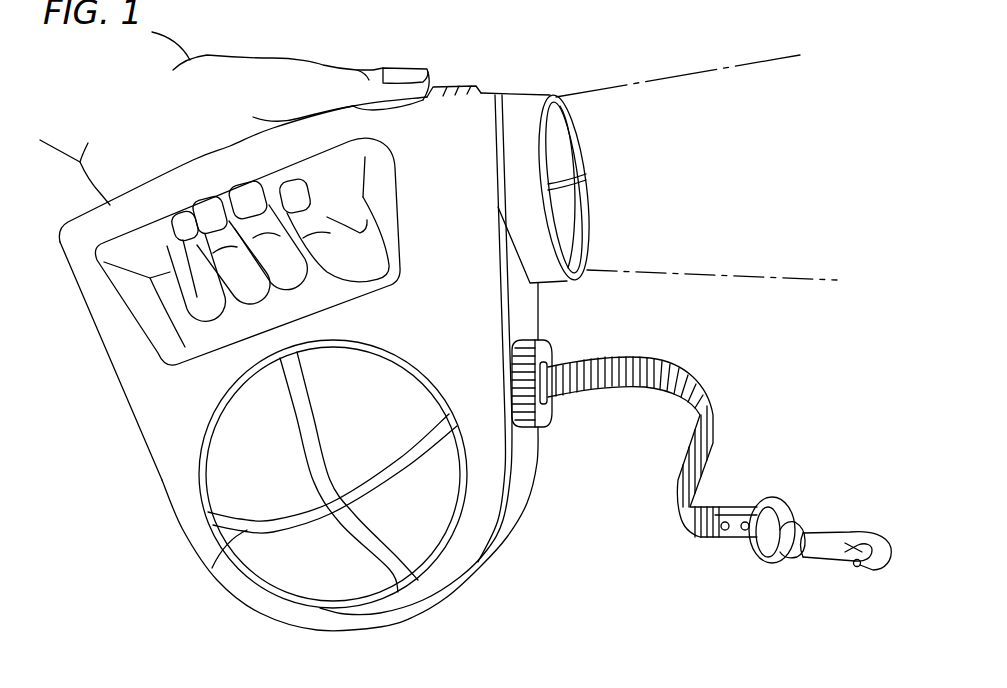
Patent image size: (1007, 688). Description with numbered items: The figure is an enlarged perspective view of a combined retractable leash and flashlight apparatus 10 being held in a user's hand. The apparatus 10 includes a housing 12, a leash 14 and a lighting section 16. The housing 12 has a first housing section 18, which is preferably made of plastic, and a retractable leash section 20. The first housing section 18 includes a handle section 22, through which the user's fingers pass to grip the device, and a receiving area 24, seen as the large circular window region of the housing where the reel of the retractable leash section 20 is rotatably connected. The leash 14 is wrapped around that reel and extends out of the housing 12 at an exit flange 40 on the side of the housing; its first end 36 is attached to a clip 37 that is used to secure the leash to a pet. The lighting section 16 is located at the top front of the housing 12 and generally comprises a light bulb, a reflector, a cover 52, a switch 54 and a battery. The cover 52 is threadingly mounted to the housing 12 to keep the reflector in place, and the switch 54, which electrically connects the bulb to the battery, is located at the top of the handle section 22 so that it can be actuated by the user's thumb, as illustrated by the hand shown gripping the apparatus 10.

The apparatus 10 is at (782, 136).
The housing 12 is at (128, 405).
The leash 14 is at (713, 413).
The lighting section 16 is at (584, 150).
The first housing section 18 is at (167, 493).
The retractable leash section 20 is at (212, 568).
The handle section 22 is at (113, 193).
The receiving area 24 is at (430, 570).
The first end 36 is at (732, 538).
The clip 37 is at (818, 533).
The exit flange 40 is at (552, 412).
The cover 52 is at (576, 282).
The switch 54 is at (447, 87).